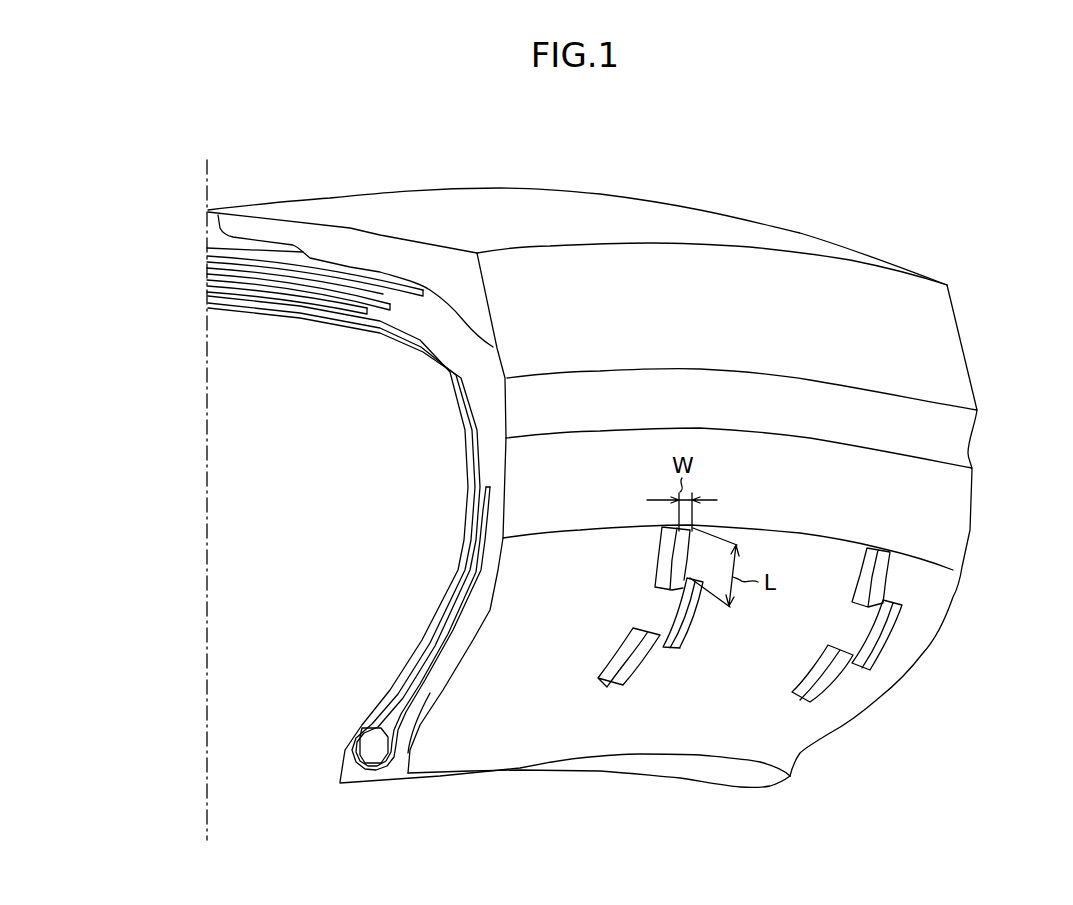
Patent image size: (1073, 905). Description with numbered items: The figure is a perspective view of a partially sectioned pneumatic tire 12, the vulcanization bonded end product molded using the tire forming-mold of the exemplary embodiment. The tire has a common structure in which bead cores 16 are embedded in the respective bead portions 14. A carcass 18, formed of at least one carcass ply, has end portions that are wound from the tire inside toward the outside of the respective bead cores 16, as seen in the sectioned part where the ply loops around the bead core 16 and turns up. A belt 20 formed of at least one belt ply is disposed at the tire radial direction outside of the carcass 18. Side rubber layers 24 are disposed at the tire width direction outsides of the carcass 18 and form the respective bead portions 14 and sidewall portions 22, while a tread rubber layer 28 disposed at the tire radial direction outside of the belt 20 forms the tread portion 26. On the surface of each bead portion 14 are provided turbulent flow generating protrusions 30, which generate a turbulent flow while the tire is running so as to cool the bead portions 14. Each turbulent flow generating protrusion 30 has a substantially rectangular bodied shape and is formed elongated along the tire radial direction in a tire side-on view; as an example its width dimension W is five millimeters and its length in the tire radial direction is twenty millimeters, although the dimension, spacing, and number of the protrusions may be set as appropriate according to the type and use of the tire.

The pneumatic tire 12 is at (734, 153).
The bead portion 14 is at (787, 732).
The bead core 16 is at (367, 747).
The carcass 18 is at (420, 687).
The belt 20 is at (333, 267).
The sidewall portion 22 is at (953, 502).
The side rubber layer 24 is at (490, 425).
The tread portion 26 is at (500, 207).
The tread rubber layer 28 is at (423, 257).
The turbulent flow generating protrusion 30 is at (668, 558).